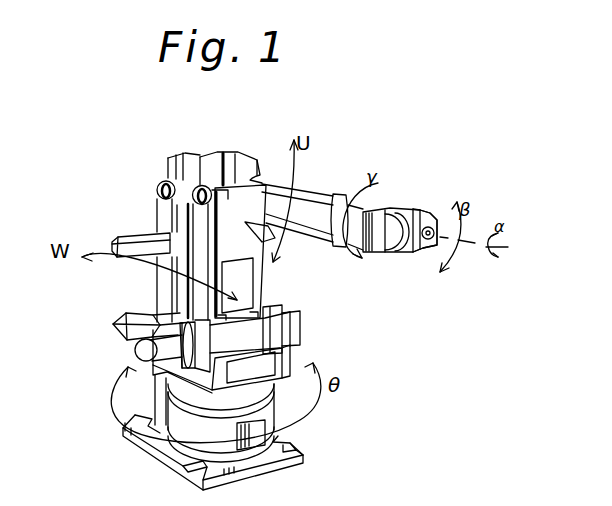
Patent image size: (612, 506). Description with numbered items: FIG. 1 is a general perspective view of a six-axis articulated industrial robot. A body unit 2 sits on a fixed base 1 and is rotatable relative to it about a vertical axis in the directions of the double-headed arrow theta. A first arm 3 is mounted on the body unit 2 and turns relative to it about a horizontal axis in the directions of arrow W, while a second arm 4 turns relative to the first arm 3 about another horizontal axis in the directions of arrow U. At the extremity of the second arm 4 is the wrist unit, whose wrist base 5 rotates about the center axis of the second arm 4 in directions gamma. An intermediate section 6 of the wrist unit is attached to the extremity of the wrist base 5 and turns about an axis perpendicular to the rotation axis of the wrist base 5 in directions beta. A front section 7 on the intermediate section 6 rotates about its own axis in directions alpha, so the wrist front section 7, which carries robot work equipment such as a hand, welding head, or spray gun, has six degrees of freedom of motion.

The fixed base 1 is at (160, 453).
The body unit 2 is at (283, 357).
The first arm 3 is at (262, 283).
The second arm 4 is at (320, 203).
The wrist base 5 is at (390, 241).
The wrist intermediate section 6 is at (425, 217).
The wrist front section 7 is at (428, 243).